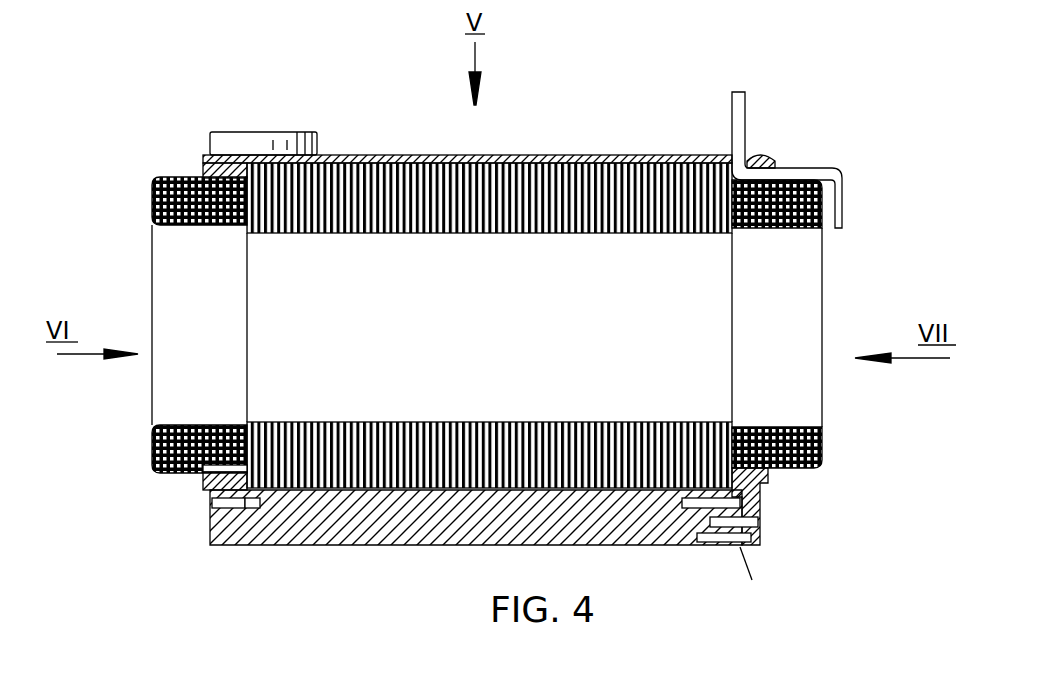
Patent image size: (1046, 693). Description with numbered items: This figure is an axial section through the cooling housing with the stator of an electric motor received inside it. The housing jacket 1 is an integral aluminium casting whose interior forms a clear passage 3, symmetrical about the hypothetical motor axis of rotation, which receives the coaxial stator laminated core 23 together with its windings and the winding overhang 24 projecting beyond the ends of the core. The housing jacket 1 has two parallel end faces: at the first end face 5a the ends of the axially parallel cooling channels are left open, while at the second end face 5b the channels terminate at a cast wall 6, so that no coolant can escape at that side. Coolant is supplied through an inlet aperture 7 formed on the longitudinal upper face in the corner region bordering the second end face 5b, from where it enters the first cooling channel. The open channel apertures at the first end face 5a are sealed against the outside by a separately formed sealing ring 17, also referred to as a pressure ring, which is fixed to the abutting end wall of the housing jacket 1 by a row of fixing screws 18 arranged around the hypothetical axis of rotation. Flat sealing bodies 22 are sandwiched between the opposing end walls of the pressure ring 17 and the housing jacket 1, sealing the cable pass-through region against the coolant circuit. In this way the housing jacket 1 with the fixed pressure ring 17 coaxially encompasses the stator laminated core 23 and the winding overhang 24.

The housing jacket 1 is at (550, 155).
The clear passage 3 is at (487, 335).
The first end face 5a is at (805, 163).
The second end face 5b is at (168, 252).
The cast wall 6 is at (210, 160).
The inlet aperture 7 is at (247, 131).
The sealing ring 17 is at (770, 157).
The fixing screws 18 is at (766, 503).
The flat sealing bodies 22 is at (759, 576).
The stator laminated core 23 is at (605, 187).
The winding overhang 24 is at (824, 216).